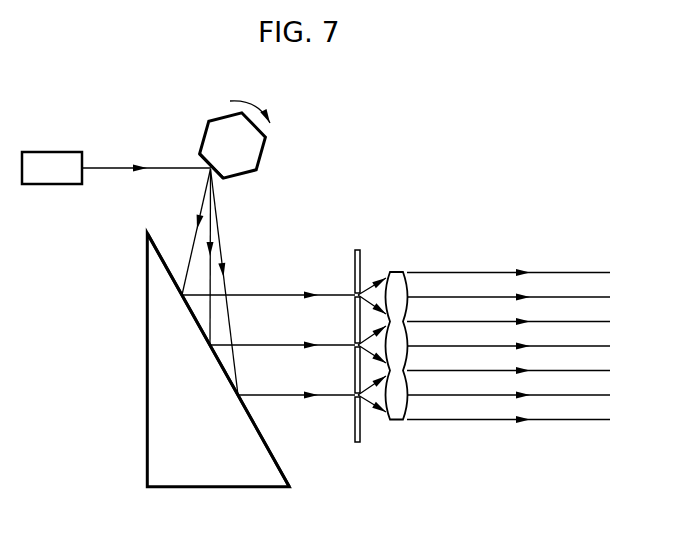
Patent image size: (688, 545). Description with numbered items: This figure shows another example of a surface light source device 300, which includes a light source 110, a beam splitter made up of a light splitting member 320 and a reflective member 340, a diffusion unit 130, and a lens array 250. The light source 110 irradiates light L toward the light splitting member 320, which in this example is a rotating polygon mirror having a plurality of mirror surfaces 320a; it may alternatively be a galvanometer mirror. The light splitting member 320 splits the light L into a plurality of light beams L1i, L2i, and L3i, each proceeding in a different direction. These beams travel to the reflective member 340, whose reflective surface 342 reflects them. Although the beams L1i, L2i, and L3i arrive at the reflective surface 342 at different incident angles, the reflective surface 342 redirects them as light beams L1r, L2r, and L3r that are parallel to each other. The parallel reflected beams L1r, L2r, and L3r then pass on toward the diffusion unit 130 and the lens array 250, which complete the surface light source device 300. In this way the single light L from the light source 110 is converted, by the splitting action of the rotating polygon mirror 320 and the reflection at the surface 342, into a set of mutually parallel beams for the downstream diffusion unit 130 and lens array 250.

The surface light source device 300 is at (497, 150).
The light source 110 is at (50, 155).
The light splitting member 320 is at (257, 152).
The mirror surfaces 320a is at (204, 160).
The reflective member 340 is at (151, 422).
The reflective surface 342 is at (272, 452).
The diffusion unit 130 is at (358, 247).
The lens array 250 is at (398, 272).
The light L is at (146, 157).
The first split light beam L1i is at (200, 207).
The second split light beam L2i is at (211, 228).
The third split light beam L3i is at (222, 252).
The first reflected light beam L1r is at (268, 285).
The second reflected light beam L2r is at (282, 335).
The third reflected light beam L3r is at (296, 384).